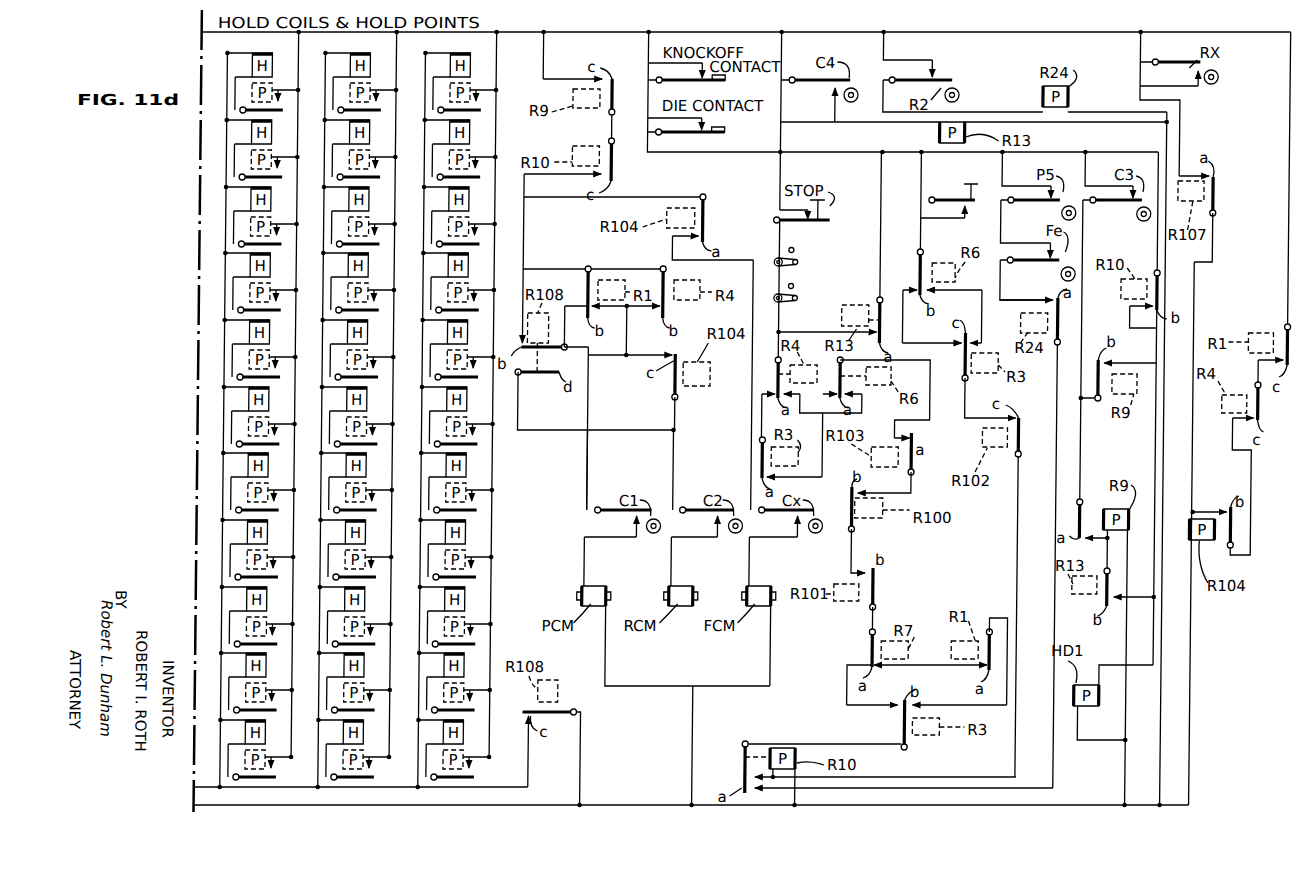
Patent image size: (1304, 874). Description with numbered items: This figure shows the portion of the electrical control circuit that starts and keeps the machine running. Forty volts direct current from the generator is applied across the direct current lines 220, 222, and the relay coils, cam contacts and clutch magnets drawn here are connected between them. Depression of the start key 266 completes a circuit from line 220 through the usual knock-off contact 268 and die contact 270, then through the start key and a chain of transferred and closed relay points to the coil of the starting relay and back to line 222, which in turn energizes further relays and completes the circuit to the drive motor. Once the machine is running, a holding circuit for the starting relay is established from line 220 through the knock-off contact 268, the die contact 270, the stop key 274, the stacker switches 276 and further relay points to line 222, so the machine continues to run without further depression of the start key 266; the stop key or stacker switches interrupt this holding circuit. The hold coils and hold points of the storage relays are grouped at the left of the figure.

The direct current line 220 is at (583, 32).
The direct current line 222 is at (665, 805).
The start key 266 is at (978, 212).
The knock-off contact 268 is at (727, 83).
The die contact 270 is at (727, 135).
The stop key 274 is at (832, 220).
The stacker switches 276 is at (800, 264).